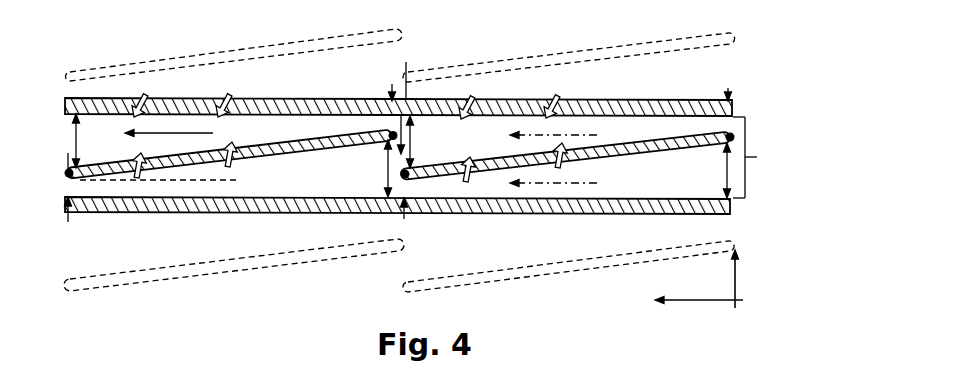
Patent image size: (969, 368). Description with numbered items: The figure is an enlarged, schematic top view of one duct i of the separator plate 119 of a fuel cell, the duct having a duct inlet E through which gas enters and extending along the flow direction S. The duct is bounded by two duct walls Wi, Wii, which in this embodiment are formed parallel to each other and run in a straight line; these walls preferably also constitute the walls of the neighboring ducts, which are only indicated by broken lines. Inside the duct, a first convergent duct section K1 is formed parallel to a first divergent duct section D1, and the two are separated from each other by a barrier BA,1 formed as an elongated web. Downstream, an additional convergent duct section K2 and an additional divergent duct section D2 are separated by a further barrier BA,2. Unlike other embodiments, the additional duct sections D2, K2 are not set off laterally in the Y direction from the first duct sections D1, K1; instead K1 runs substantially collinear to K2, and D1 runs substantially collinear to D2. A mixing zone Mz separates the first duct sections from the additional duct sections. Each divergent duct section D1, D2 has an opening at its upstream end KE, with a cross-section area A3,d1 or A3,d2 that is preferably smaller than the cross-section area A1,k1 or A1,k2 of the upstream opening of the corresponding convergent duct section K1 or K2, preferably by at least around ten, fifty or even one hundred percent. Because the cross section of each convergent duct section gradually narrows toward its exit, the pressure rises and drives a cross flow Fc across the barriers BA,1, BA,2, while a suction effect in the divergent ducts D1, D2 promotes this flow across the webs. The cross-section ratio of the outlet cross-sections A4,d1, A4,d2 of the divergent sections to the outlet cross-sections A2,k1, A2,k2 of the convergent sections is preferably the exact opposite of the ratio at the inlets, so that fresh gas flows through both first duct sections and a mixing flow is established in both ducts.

The separator plate 119 is at (548, 34).
The outlet cross-section of the additional divergent duct section A4,d2 is at (78, 135).
The cross-section area of the upstream opening of the additional divergent duct sect A3,d2 is at (371, 79).
The outlet cross-section of the first divergent duct section A4,d1 is at (414, 142).
The cross-section area of the upstream opening of the first divergent duct section A3,d1 is at (728, 82).
The outlet cross-section of the additional convergent duct section A2,k2 is at (75, 198).
The cross-section area of the upstream opening of the additional convergent duct sec A1,k2 is at (385, 178).
The outlet cross-section of the first convergent duct section A2,k1 is at (410, 221).
The cross-section area of the upstream opening of the first convergent duct section A1,k1 is at (720, 183).
The flow direction S is at (166, 133).
The Y direction Y is at (747, 275).
The duct wall Wii is at (268, 98).
The duct wall Wi is at (287, 213).
The additional divergent duct section D2 is at (285, 135).
The first divergent duct section D1 is at (643, 137).
The additional convergent duct section K2 is at (283, 183).
The first convergent duct section K1 is at (643, 183).
The mixing zone Mz is at (400, 95).
The upstream end KE is at (741, 123).
The duct inlet E is at (754, 157).
The duct i is at (768, 188).
The barrier BA,2 is at (165, 168).
The barrier BA,1 is at (613, 156).
The cross flow Fc is at (478, 180).